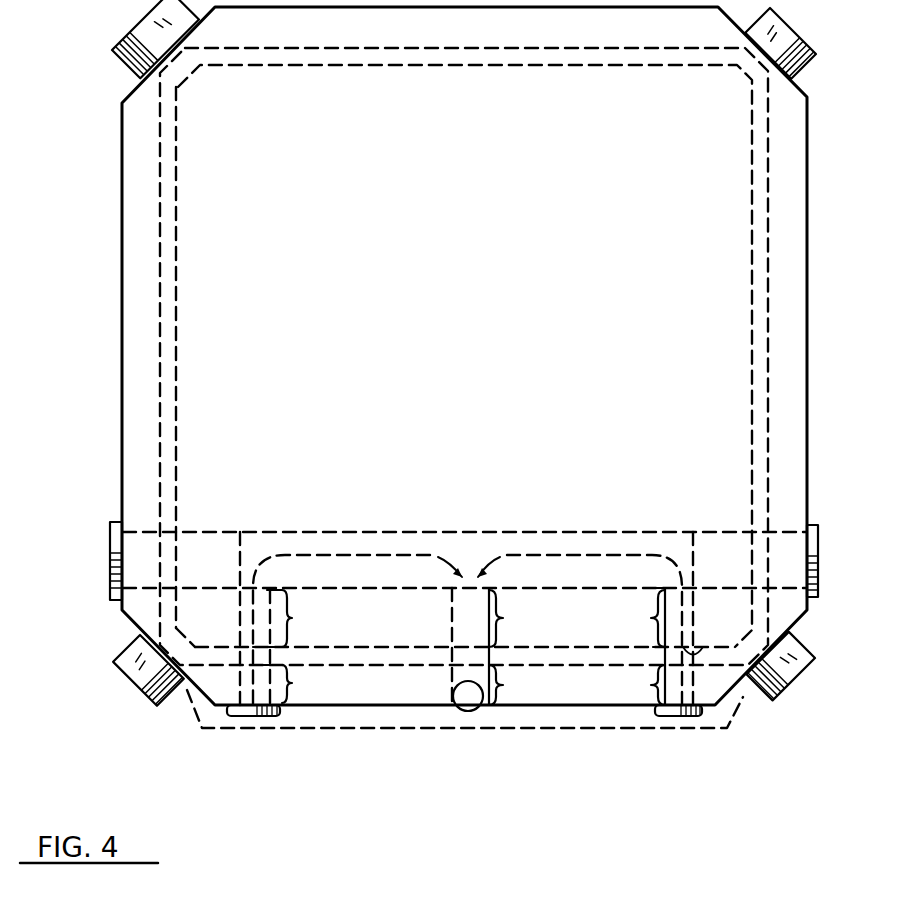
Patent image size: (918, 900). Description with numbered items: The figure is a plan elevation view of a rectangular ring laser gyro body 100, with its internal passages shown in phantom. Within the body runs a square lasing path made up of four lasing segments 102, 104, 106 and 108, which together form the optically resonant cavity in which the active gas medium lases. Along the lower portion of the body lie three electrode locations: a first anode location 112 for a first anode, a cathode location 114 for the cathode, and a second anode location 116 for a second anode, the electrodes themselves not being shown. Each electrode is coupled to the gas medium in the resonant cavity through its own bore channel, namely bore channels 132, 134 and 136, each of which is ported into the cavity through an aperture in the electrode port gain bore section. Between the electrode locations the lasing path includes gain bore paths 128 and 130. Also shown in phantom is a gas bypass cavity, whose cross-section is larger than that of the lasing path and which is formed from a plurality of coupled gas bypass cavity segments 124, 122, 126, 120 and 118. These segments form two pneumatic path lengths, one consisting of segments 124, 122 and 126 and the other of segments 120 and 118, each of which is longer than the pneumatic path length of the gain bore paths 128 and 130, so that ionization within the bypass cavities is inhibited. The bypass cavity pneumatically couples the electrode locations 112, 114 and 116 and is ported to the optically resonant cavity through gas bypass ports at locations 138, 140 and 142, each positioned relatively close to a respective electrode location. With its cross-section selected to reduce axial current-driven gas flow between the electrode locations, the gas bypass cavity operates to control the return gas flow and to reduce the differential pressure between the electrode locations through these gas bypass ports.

The rectangular ring laser gyro body 100 is at (808, 237).
The lasing segment 102 is at (174, 282).
The lasing segment 104 is at (519, 56).
The lasing segment 106 is at (752, 272).
The lasing segment 108 is at (364, 732).
The anode 1 location 112 is at (248, 716).
The cathode location 114 is at (470, 714).
The anode 2 location 116 is at (673, 716).
The gas bypass cavity segment 118 is at (651, 618).
The gas bypass cavity segment 120 is at (582, 585).
The gas bypass cavity segment 122 is at (370, 585).
The gas bypass cavity segment 124 is at (292, 618).
The gas bypass cavity segment 126 is at (503, 618).
The gain bore path 128 is at (352, 657).
The gain bore path 130 is at (566, 662).
The bore channel 132 is at (292, 683).
The bore channel 134 is at (503, 685).
The bore channel 136 is at (651, 685).
The gas bypass port location 138 is at (247, 658).
The gas bypass port location 140 is at (468, 658).
The gas bypass port location 142 is at (694, 656).